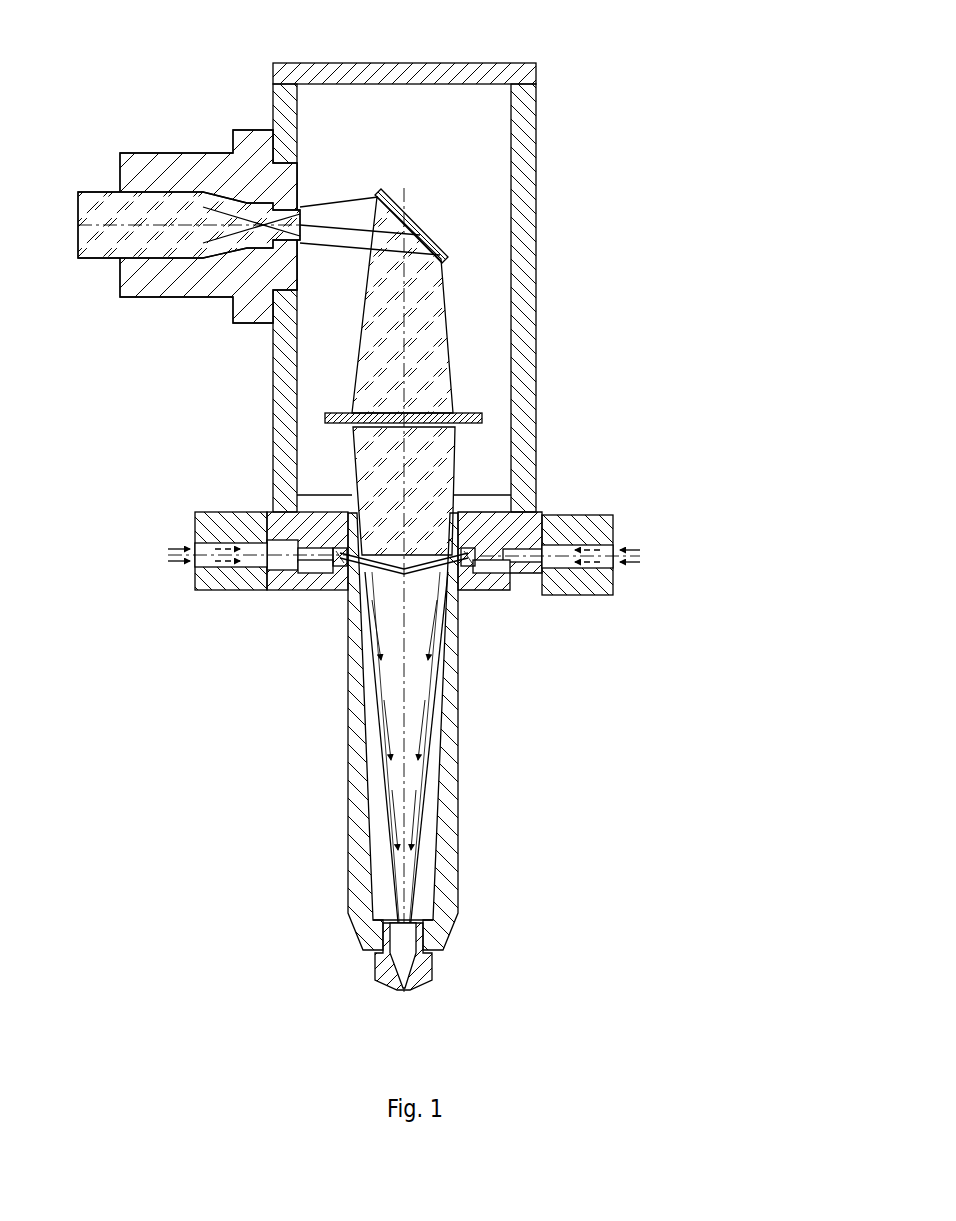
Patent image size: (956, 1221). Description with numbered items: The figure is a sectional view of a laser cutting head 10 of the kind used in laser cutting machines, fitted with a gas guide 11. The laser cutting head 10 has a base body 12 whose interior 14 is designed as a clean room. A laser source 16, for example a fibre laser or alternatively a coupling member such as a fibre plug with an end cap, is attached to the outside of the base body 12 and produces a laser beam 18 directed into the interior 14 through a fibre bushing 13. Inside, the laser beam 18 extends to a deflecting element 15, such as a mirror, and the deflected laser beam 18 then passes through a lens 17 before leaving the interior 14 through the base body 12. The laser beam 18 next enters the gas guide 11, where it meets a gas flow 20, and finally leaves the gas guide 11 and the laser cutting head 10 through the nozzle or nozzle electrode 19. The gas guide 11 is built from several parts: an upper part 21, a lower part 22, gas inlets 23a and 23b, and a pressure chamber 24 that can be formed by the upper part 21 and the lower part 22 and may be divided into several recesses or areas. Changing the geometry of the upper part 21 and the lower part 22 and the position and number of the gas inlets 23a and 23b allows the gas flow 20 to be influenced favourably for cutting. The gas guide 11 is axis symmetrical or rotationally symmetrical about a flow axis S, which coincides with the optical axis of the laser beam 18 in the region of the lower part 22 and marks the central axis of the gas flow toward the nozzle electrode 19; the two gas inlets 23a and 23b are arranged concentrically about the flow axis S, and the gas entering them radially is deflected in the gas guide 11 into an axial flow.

The laser cutting head 10 is at (307, 643).
The gas guide 11 is at (513, 527).
The base body 12 is at (521, 125).
The fibre bushing 13 is at (235, 268).
The interior 14 is at (450, 173).
The deflecting element 15 is at (421, 229).
The laser source 16 is at (128, 201).
The lens 17 is at (428, 418).
The laser beam 18 is at (415, 292).
The nozzle electrode 19 is at (417, 968).
The gas flow 20 is at (427, 567).
The upper part 21 is at (300, 527).
The lower part 22 is at (451, 722).
The gas inlet 23a is at (218, 566).
The gas inlet 23b is at (580, 577).
The pressure chamber 24 is at (469, 556).
The flow axis S is at (404, 380).